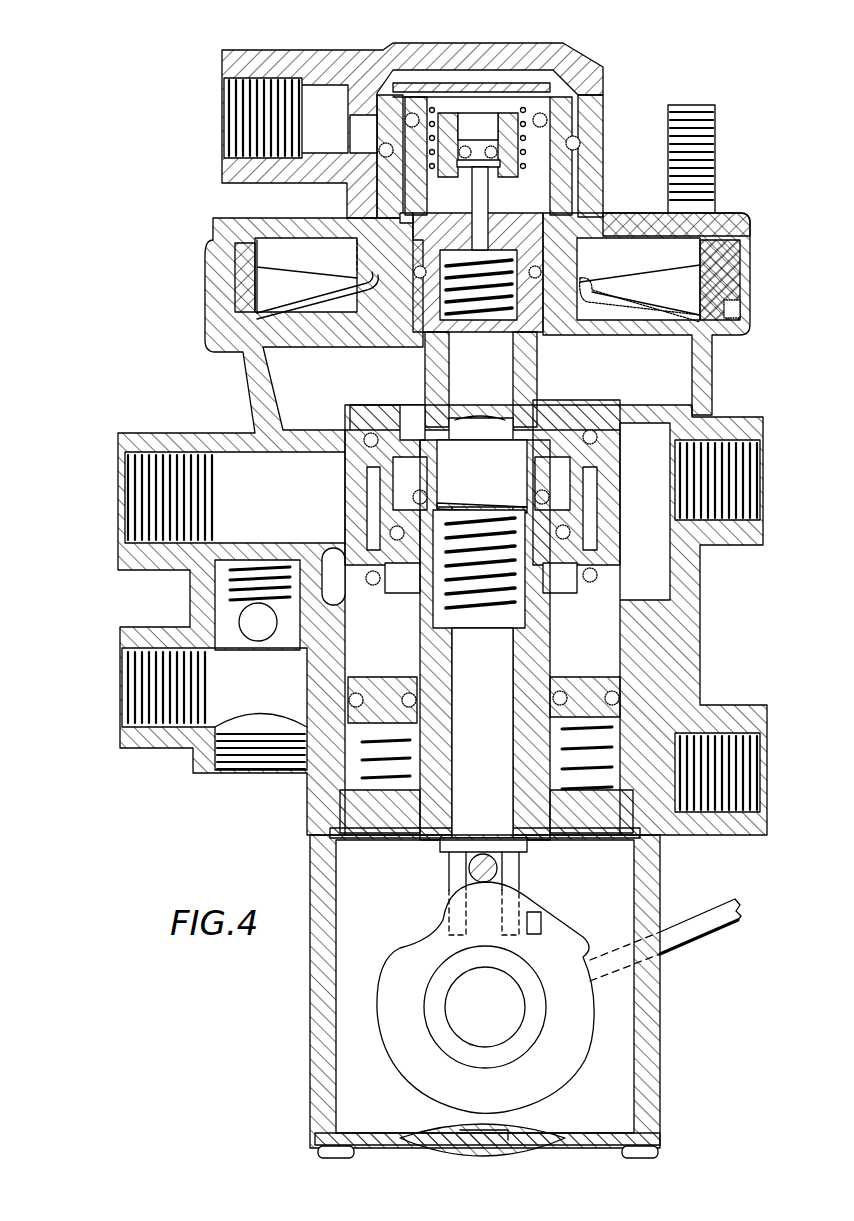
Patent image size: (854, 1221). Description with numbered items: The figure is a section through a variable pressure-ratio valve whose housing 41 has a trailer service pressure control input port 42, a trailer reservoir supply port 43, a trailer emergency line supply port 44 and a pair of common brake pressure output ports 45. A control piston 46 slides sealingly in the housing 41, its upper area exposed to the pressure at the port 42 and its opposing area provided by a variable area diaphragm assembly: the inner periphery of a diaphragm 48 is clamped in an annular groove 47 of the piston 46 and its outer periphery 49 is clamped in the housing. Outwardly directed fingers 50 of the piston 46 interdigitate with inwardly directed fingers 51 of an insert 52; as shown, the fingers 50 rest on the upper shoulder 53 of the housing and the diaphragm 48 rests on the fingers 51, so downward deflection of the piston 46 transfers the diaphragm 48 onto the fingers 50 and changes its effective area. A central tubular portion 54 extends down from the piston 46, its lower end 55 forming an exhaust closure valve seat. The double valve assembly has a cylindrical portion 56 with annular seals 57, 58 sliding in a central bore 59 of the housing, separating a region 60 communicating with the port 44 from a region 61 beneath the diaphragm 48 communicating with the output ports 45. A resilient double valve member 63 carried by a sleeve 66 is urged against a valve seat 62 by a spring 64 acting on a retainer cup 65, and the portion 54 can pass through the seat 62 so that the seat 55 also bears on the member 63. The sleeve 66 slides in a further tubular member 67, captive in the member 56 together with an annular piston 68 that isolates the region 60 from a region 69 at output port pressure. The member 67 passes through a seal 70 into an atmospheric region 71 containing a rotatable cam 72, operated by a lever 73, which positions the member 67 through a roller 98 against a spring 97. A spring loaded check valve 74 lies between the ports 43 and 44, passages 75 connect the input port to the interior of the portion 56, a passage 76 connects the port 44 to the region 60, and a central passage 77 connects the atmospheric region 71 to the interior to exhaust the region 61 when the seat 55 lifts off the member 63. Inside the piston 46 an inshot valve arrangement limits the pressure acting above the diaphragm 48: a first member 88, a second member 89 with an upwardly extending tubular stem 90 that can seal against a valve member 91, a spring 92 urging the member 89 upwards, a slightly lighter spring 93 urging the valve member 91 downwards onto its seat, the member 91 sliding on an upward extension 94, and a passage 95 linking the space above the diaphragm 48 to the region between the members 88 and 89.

The housing 41 is at (592, 88).
The trailer service pressure control input port 42 is at (237, 110).
The trailer reservoir supply port 43 is at (140, 515).
The trailer emergency line supply port 44 is at (133, 700).
The common brake pressure output ports 45 is at (747, 490).
The control piston 46 is at (590, 190).
The annular groove 47 is at (340, 320).
The diaphragm 48 is at (647, 303).
The outer periphery of the diaphragm 49 is at (737, 300).
The outwardly directed fingers 50 is at (670, 243).
The inwardly directed fingers 51 is at (687, 273).
The insert 52 is at (707, 287).
The upper shoulder 53 is at (613, 227).
The central tubular portion 54 is at (430, 365).
The lower end 55 is at (543, 397).
The cylindrical portion 56 is at (387, 450).
The annular seal 57 is at (603, 438).
The annular seal 58 is at (593, 583).
The central bore 59 is at (590, 515).
The region 60 is at (412, 632).
The region 61 is at (352, 362).
The valve seat 62 is at (415, 433).
The resilient double valve member 63 is at (430, 425).
The spring 64 is at (467, 613).
The retainer cup 65 is at (480, 505).
The sleeve 66 is at (430, 466).
The further tubular member 67 is at (400, 522).
The annular piston 68 is at (632, 678).
The region 69 is at (567, 737).
The seal 70 is at (383, 827).
The atmospheric region 71 is at (405, 919).
The rotatable cam 72 is at (580, 1020).
The lever 73 is at (712, 920).
The spring loaded check valve 74 is at (257, 632).
The passages 75 is at (393, 480).
The passage 76 is at (303, 657).
The central passage 77 is at (500, 734).
The first member 88 is at (405, 160).
The second member 89 is at (390, 220).
The tubular stem 90 is at (425, 213).
The valve member 91 is at (520, 105).
The spring 92 is at (400, 97).
The spring 93 is at (438, 108).
The upward extension 94 is at (478, 115).
The passage 95 is at (350, 243).
The spring 97 is at (627, 743).
The roller 98 is at (500, 868).